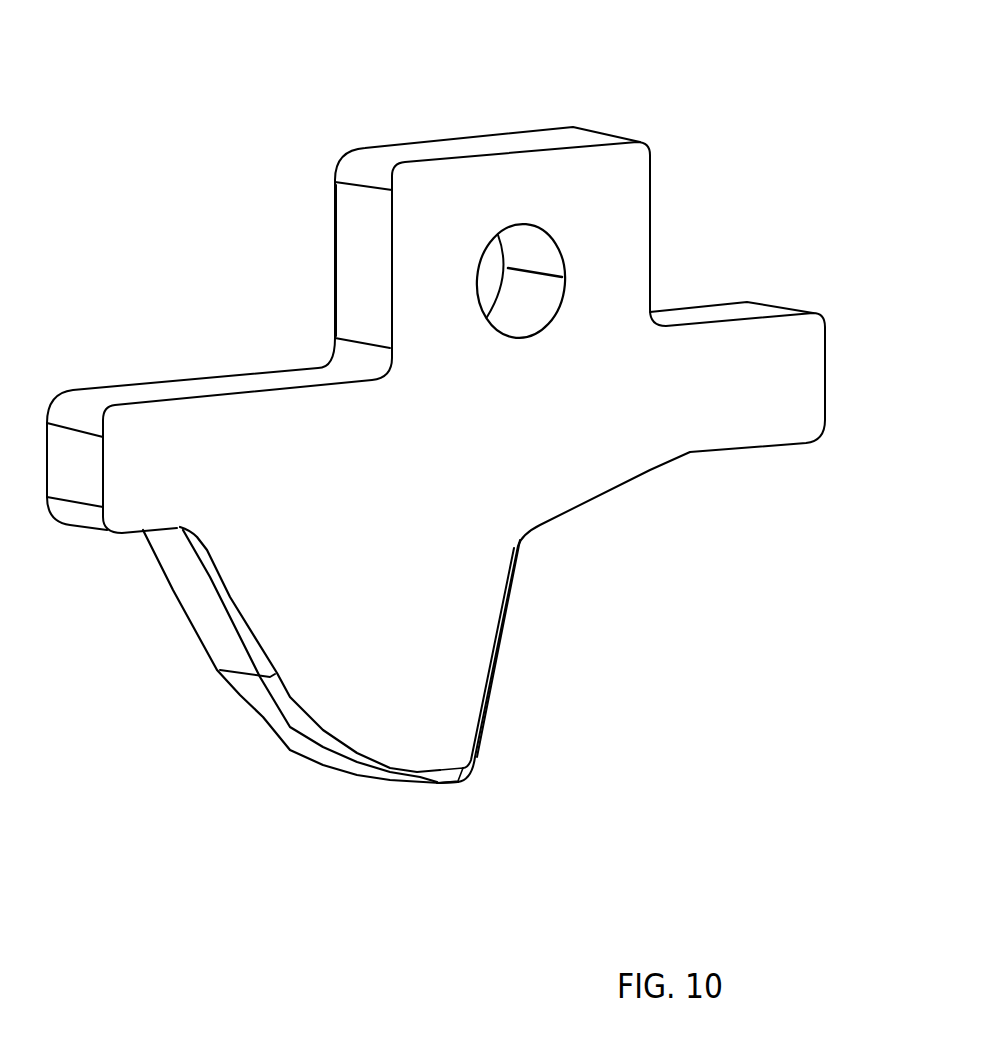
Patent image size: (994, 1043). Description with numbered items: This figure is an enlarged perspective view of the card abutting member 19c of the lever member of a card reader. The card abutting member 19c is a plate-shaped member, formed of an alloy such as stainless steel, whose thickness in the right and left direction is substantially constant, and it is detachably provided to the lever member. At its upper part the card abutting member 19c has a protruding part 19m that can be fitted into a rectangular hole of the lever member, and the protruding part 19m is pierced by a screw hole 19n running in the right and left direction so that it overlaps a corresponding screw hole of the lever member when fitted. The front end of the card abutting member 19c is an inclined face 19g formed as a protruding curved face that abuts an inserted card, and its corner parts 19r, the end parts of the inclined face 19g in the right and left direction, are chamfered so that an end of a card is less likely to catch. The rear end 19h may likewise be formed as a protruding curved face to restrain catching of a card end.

The card abutting member 19c is at (436, 432).
The protruding part 19m is at (408, 267).
The screw hole 19n is at (480, 295).
The inclined face 19g is at (187, 581).
The corner parts 19r is at (283, 703).
The rear end 19h is at (497, 663).